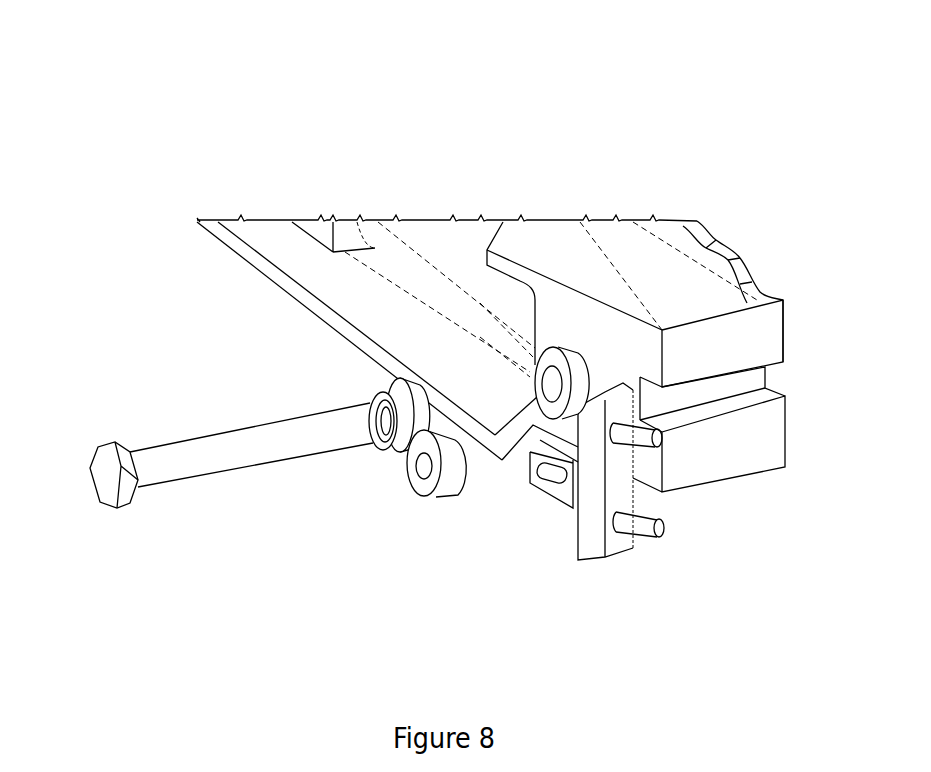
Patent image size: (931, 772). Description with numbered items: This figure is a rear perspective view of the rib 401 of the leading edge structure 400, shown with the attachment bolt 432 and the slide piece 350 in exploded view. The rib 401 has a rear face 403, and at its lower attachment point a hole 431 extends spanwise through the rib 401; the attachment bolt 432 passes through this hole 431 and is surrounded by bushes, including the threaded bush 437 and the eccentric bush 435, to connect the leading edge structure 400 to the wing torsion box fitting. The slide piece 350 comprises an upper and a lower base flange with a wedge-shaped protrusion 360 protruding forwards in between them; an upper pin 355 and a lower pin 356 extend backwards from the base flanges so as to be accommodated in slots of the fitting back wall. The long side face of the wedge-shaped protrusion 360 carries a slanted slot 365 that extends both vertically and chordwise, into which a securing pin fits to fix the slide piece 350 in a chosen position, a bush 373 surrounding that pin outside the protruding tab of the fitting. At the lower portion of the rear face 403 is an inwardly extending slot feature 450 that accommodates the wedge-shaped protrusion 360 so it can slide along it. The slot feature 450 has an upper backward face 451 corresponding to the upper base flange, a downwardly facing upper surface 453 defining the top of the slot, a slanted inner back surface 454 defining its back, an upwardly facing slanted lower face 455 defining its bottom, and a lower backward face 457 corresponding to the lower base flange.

The leading edge structure 400 is at (437, 207).
The rib 401 is at (465, 243).
The rear face 403 is at (795, 292).
The hole 431 is at (568, 355).
The attachment bolt 432 is at (180, 468).
The eccentric bush 435 is at (372, 402).
The threaded bush 437 is at (535, 388).
The slot feature 450 is at (715, 340).
The upper backward face 451 is at (750, 340).
The upper surface 453 is at (655, 412).
The inner back surface 454 is at (692, 393).
The lower face 455 is at (743, 398).
The lower backward face 457 is at (758, 447).
The slide piece 350 is at (616, 566).
The upper pin 355 is at (640, 433).
The lower pin 356 is at (660, 530).
The wedge-shaped protrusion 360 is at (522, 489).
The slanted slot 365 is at (549, 487).
The bush 373 is at (425, 470).